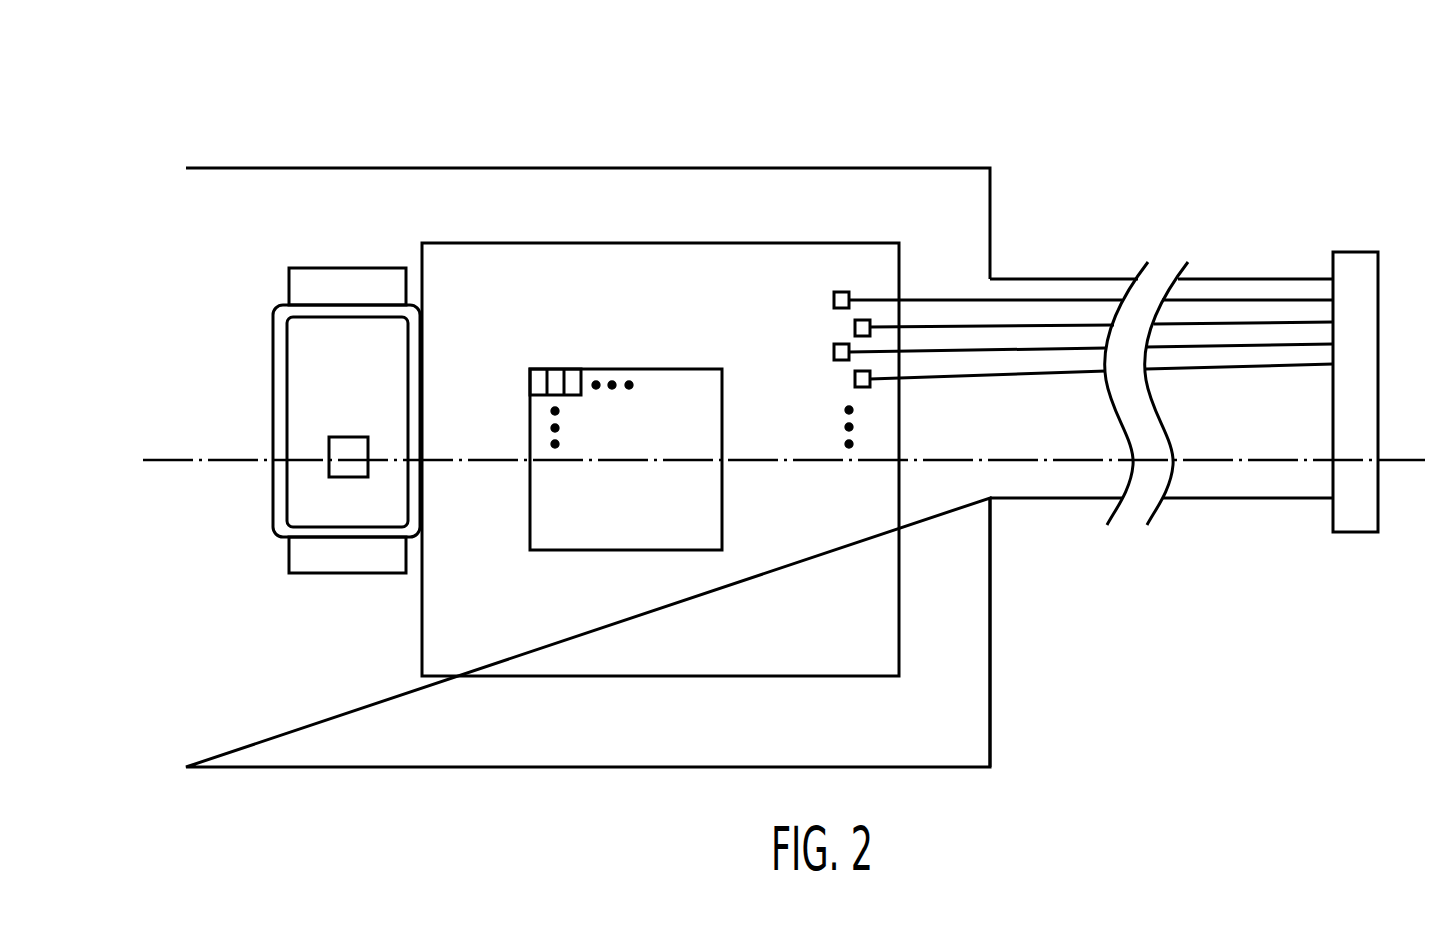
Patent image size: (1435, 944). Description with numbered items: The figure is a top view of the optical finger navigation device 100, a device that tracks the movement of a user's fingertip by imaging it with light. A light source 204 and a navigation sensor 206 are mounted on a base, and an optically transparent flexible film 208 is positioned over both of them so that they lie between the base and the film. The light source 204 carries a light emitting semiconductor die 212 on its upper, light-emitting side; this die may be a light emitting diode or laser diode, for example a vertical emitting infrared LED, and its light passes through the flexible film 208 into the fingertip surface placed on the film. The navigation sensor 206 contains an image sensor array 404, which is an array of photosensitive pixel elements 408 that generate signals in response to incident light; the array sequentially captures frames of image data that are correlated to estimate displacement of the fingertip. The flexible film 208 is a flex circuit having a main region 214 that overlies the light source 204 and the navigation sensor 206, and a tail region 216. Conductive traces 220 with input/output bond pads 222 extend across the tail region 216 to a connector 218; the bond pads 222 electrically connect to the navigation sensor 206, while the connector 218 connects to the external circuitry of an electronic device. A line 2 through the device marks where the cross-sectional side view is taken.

The line 2- 2 is at (773, 460).
The optical finger navigation device 100 is at (1237, 128).
The light source 204 is at (273, 316).
The navigation sensor 206 is at (781, 243).
The optically transparent flexible film 208 is at (959, 168).
The light emitting semiconductor die 212 is at (329, 472).
The main region 214 is at (995, 733).
The tail region 216 is at (1243, 511).
The connector 218 is at (1352, 252).
The conductive traces 220 is at (1061, 322).
The input/output bond pads 222 is at (855, 329).
The image sensor array 404 is at (704, 552).
The photosensitive pixel elements 408 is at (538, 372).